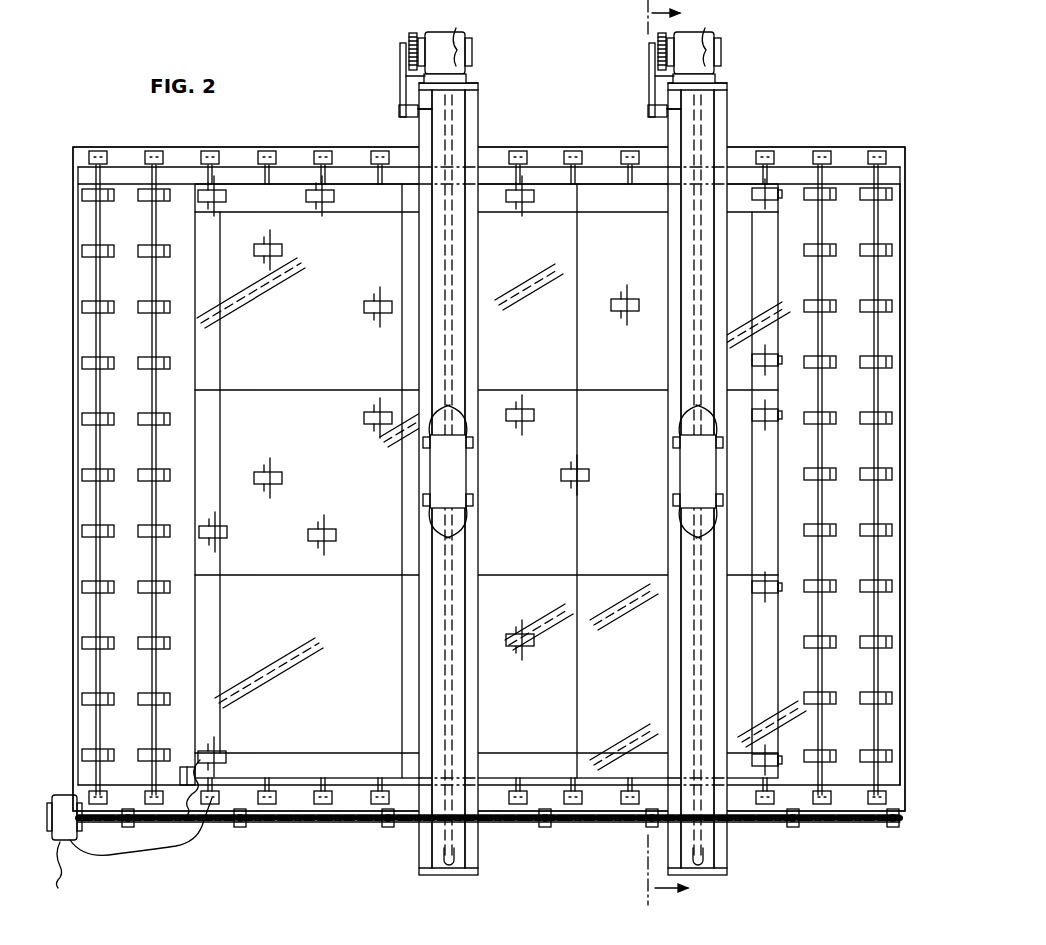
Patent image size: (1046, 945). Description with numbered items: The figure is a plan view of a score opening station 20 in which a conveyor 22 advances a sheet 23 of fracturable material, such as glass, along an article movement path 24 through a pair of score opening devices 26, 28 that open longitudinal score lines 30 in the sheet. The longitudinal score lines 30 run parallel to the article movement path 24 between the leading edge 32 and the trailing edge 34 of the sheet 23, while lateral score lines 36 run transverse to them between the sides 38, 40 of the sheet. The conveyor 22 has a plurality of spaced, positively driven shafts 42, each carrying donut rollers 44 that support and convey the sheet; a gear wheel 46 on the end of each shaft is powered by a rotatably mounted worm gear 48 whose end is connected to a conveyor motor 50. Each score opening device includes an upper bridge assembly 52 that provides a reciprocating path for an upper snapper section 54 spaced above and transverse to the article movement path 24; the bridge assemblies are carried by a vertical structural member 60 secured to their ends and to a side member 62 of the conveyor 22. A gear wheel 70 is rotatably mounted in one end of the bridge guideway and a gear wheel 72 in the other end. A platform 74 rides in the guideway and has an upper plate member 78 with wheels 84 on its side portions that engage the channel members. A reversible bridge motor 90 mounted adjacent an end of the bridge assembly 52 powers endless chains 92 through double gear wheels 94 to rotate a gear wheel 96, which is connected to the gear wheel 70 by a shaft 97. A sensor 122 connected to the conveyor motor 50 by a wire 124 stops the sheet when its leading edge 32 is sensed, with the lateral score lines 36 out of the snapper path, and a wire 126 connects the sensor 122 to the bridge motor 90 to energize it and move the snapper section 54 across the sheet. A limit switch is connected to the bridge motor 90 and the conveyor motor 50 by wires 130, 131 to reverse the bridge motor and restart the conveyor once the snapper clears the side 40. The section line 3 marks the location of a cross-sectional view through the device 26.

The section line 3- 3 is at (653, 452).
The score opening station 20 is at (325, 122).
The conveyor 22 is at (848, 130).
The sheet 23 is at (792, 243).
The article movement path 24 is at (886, 500).
The score opening device 26 is at (747, 102).
The score opening device 28 is at (496, 106).
The longitudinal score lines 30 is at (650, 212).
The leading edge 32 is at (197, 267).
The trailing edge 34 is at (800, 338).
The lateral score lines 36 is at (384, 262).
The side 38 is at (600, 165).
The side 40 is at (505, 767).
The shafts 42 is at (142, 372).
The donut rollers 44 is at (132, 314).
The gear wheel 46 is at (266, 828).
The worm gear 48 is at (318, 827).
The conveyor motor 50 is at (62, 796).
The upper bridge assembly 52 is at (481, 126).
The upper snapper section 54 is at (472, 462).
The vertical structural member 60 is at (474, 88).
The side member 62 is at (797, 152).
The gear wheel 70 is at (442, 115).
The gear wheel 72 is at (458, 867).
The platform 74 is at (418, 461).
The upper plate member 78 is at (464, 478).
The wheels 84 is at (466, 406).
The bridge motor 90 is at (470, 57).
The endless chains 92 is at (398, 48).
The double gear wheels 94 is at (414, 37).
The gear wheel 96 is at (398, 108).
The shaft 97 is at (412, 112).
The sensor 122 is at (190, 803).
The wire 124 is at (138, 844).
The wire 126 is at (468, 22).
The wire 130 is at (420, 76).
The wire 131 is at (62, 856).